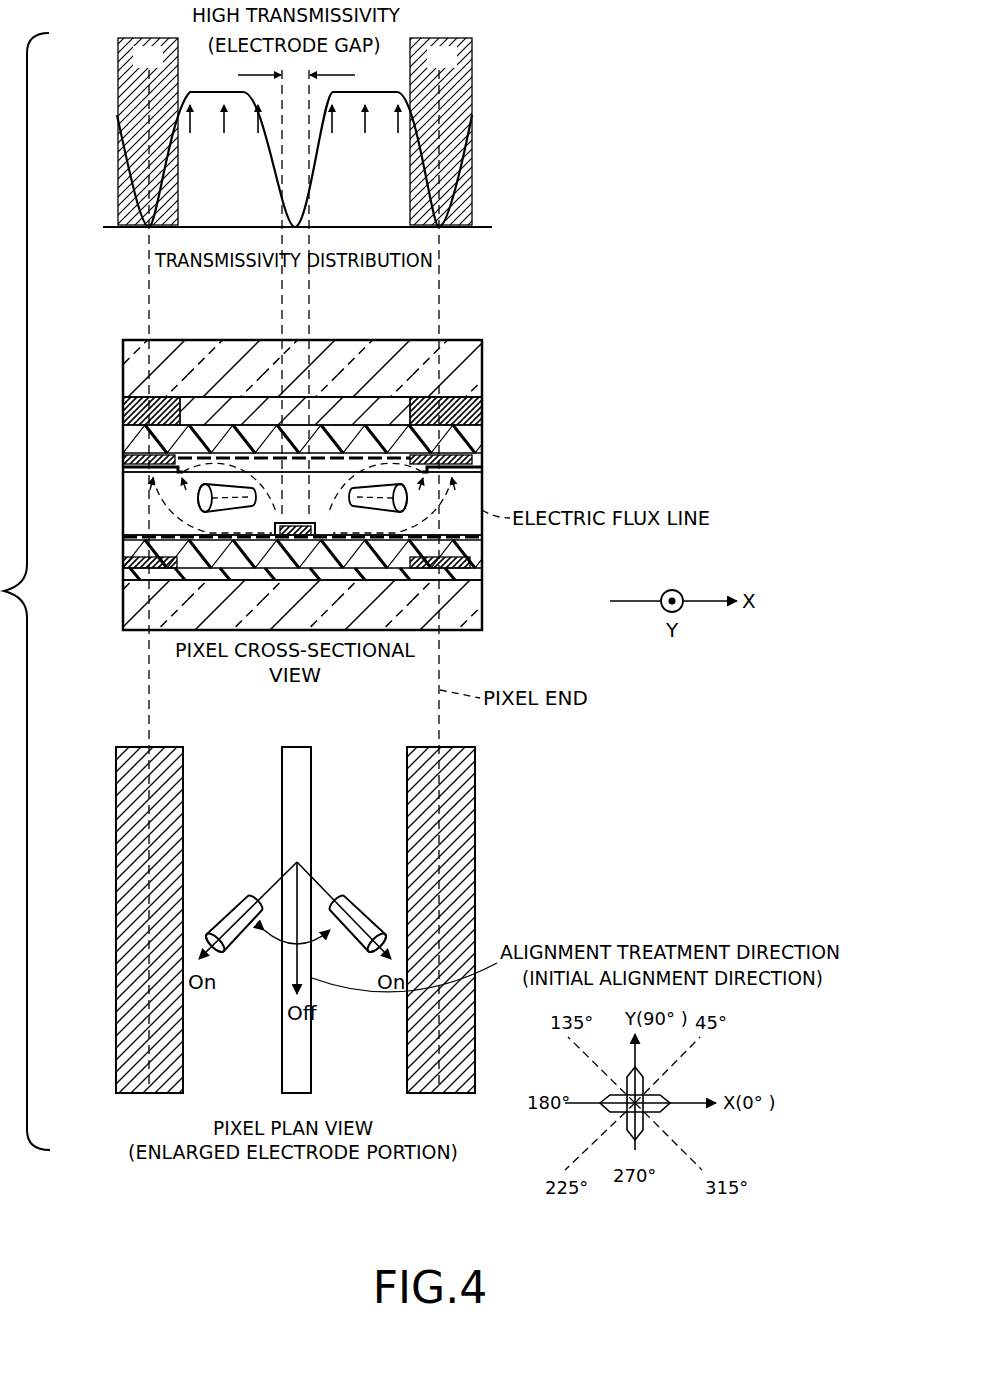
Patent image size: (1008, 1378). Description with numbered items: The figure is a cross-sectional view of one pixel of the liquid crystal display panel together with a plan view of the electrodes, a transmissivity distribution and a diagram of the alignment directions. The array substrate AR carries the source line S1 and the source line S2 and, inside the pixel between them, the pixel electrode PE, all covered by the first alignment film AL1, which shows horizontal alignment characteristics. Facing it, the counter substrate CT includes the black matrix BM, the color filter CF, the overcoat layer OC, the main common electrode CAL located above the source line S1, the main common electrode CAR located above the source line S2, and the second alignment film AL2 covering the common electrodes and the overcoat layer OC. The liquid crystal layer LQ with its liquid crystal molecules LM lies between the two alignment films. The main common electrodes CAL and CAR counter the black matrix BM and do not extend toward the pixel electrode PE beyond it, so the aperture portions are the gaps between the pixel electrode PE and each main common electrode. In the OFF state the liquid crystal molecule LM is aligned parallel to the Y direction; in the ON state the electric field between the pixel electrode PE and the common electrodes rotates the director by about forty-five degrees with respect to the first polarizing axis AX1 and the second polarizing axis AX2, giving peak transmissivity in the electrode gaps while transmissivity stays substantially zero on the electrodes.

The black matrix BM is at (515, 387).
The counter substrate CT is at (485, 338).
The color filter CF is at (482, 415).
The overcoat layer OC is at (482, 440).
The main common electrode CAL is at (123, 460).
The main common electrode CAR is at (478, 462).
The second alignment film AL2 is at (482, 480).
The first alignment film AL1 is at (482, 540).
The liquid crystal molecule LM is at (200, 505).
The liquid crystal layer LQ is at (130, 522).
The source line S1 is at (123, 560).
The source line S2 is at (482, 572).
The pixel electrode PE is at (247, 583).
The array substrate AR is at (485, 633).
The first polarizing axis AX1 is at (663, 1092).
The second polarizing axis AX2 is at (643, 1138).